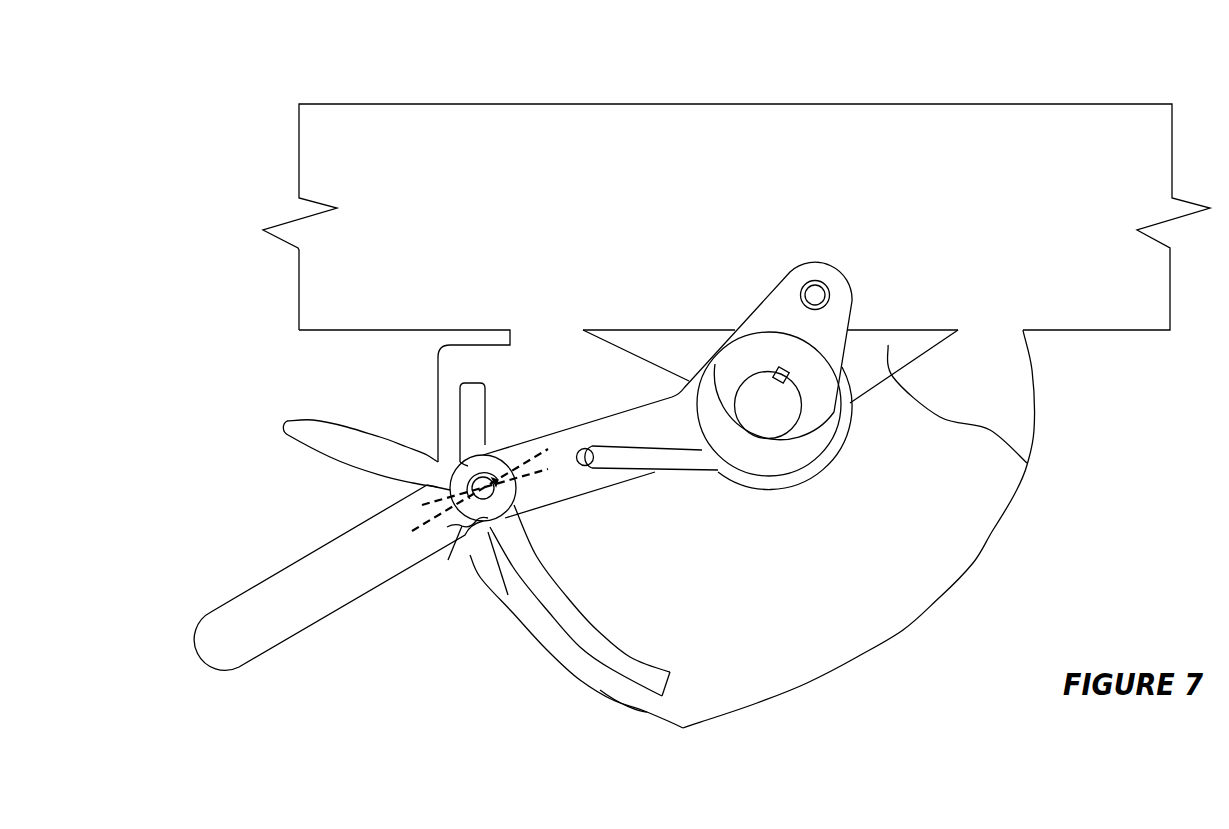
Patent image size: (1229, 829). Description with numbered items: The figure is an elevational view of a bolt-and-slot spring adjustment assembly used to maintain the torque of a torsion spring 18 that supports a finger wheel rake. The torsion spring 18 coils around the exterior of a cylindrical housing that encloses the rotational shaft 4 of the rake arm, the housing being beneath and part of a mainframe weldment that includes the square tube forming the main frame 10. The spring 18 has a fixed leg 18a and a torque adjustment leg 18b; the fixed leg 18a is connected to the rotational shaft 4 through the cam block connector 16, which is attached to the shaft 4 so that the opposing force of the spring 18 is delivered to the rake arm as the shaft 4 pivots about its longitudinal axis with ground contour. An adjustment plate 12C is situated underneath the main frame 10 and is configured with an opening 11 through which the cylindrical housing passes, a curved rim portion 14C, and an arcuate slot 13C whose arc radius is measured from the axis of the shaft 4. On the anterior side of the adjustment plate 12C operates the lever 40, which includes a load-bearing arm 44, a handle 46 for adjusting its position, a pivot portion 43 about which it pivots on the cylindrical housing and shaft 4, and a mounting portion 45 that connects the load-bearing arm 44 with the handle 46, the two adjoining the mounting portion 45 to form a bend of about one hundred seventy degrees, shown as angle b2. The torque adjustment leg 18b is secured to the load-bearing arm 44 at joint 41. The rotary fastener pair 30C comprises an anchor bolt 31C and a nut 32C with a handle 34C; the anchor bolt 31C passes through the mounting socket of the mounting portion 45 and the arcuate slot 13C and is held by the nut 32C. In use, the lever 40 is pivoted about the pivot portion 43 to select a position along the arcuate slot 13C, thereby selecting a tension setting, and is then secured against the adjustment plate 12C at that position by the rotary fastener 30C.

The rotational shaft 4 is at (760, 419).
The main frame 10 is at (687, 196).
The opening 11 is at (1027, 340).
The adjustment plate 12C is at (622, 609).
The arcuate slot 13C is at (613, 657).
The curved rim portion 14C is at (655, 712).
The cam block connector 16 is at (777, 344).
The torsion spring 18 is at (832, 427).
The fixed leg 18a is at (815, 290).
The torque adjustment leg 18b is at (603, 450).
The rotary fastener pair 30C is at (357, 419).
The anchor bolt 31C is at (443, 462).
The nut 32C is at (462, 512).
The handle 34C is at (333, 461).
The lever 40 is at (439, 529).
The joint 41 is at (603, 500).
The pivot portion 43 is at (800, 478).
The load-bearing arm 44 is at (654, 444).
The mounting portion 45 is at (503, 518).
The handle 46 is at (296, 607).
The rotation angle b2 is at (483, 500).